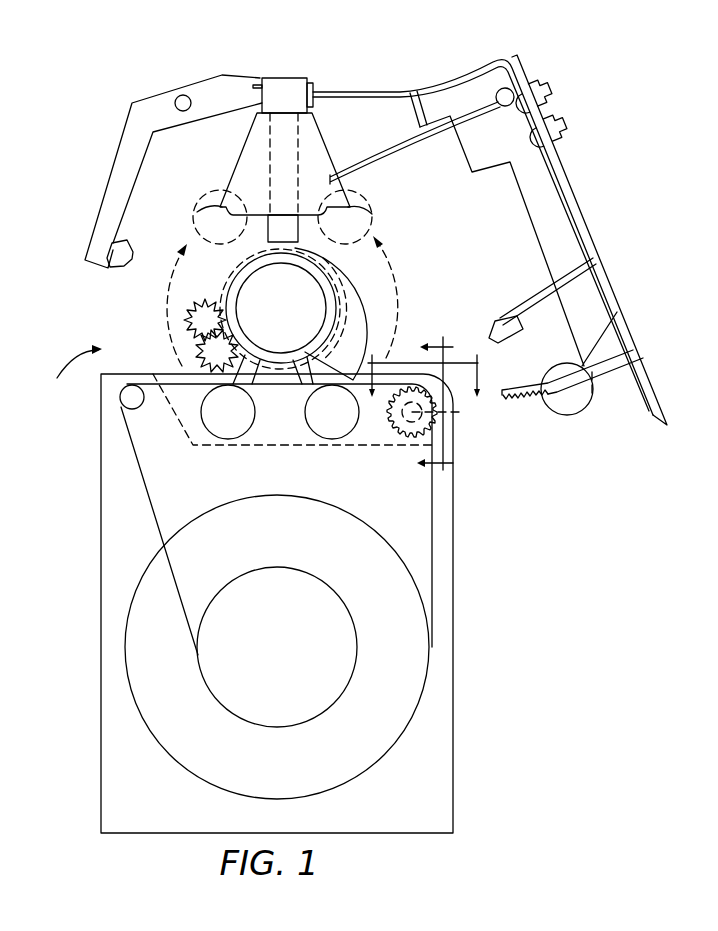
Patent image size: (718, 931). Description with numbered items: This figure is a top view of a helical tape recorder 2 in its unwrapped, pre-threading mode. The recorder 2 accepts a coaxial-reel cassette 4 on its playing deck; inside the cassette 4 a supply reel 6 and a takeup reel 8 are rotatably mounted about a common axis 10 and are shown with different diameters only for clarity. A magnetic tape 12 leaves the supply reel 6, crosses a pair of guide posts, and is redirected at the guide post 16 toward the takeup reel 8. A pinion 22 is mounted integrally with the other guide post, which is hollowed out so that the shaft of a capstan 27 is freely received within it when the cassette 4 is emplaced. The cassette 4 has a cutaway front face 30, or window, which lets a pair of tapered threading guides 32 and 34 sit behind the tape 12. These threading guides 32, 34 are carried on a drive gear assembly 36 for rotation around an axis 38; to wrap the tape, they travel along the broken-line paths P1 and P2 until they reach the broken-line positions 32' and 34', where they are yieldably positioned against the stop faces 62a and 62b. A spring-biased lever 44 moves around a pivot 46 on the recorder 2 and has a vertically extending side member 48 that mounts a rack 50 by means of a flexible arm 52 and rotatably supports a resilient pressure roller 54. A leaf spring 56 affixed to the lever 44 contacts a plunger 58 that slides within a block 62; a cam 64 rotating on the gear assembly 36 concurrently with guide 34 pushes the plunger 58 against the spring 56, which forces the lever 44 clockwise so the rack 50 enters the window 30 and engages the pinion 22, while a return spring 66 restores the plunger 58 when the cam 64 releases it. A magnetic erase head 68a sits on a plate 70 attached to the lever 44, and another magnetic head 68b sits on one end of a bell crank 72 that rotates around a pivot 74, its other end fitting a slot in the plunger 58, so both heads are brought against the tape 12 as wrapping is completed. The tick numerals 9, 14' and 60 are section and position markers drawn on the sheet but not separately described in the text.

The helical tape recorder 2 is at (71, 361).
The coaxial-reel cassette 4 is at (453, 545).
The supply reel 6 is at (385, 739).
The takeup reel 8 is at (357, 647).
The section line 9- 9 is at (424, 405).
The axis 10 is at (280, 645).
The magnetic tape 12 is at (278, 387).
The shaft 14' is at (377, 454).
The guide post 16 is at (138, 407).
The pinion 22 is at (392, 425).
The capstan 27 is at (460, 420).
The cutaway front face 30 is at (209, 447).
The threading guide 32 is at (223, 427).
The threading guide wrapped position 32' is at (207, 202).
The threading guide 34 is at (330, 427).
The threading guide wrapped position 34' is at (361, 212).
The drive gear assembly 36 is at (180, 305).
The axis 38 is at (279, 306).
The spring-biased lever 44 is at (521, 192).
The pivot 46 is at (497, 93).
The vertically extending side member 48 is at (563, 172).
The rack 50 is at (520, 385).
The flexible arm 52 is at (645, 375).
The resilient pressure roller 54 is at (570, 413).
The leaf spring 56 is at (337, 93).
The plunger 58 is at (282, 78).
The link 60 is at (410, 93).
The block 62 is at (312, 143).
The stop face 62a is at (197, 213).
The stop face 62b is at (371, 214).
The cam 64 is at (397, 308).
The return spring 66 is at (427, 145).
The magnetic erase head 68a is at (492, 330).
The magnetic head 68b is at (120, 267).
The plate 70 is at (537, 292).
The bell crank 72 is at (113, 166).
The pivot 74 is at (180, 96).
The path P1 is at (170, 279).
The path P2 is at (392, 263).